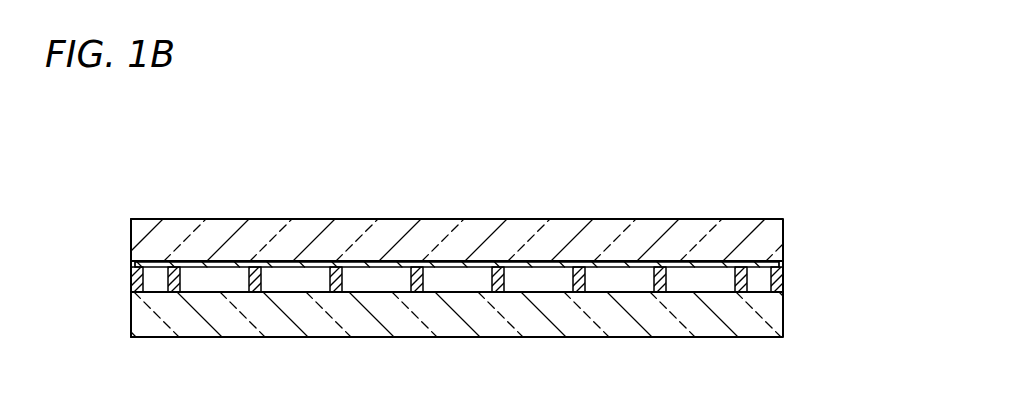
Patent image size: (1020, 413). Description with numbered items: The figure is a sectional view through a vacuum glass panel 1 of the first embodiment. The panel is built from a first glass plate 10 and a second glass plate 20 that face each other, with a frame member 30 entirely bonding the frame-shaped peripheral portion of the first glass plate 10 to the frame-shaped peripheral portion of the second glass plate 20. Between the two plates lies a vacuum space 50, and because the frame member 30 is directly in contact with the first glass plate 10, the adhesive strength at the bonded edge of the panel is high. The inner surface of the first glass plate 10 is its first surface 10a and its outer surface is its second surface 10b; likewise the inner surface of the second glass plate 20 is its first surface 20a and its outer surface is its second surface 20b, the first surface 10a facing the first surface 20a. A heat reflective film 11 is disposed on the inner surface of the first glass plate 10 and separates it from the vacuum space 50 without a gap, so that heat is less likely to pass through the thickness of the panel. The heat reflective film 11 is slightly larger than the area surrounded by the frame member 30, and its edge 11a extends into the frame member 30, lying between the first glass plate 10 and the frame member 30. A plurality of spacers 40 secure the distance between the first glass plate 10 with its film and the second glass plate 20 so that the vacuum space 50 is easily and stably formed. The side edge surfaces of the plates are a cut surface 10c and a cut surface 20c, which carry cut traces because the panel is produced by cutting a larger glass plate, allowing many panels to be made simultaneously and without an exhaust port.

The vacuum glass panel 1 is at (783, 186).
The first glass plate 10 is at (713, 219).
The first surface 10a is at (389, 264).
The second surface 10b is at (368, 219).
The cut surface 10c is at (130, 233).
The heat reflective film 11 is at (628, 262).
The edge 11a is at (132, 265).
The second glass plate 20 is at (717, 337).
The first surface 20a is at (452, 292).
The second surface 20b is at (540, 337).
The cut surface 20c is at (130, 313).
The frame member 30 is at (133, 279).
The spacers 40 is at (331, 279).
The vacuum space 50 is at (553, 282).